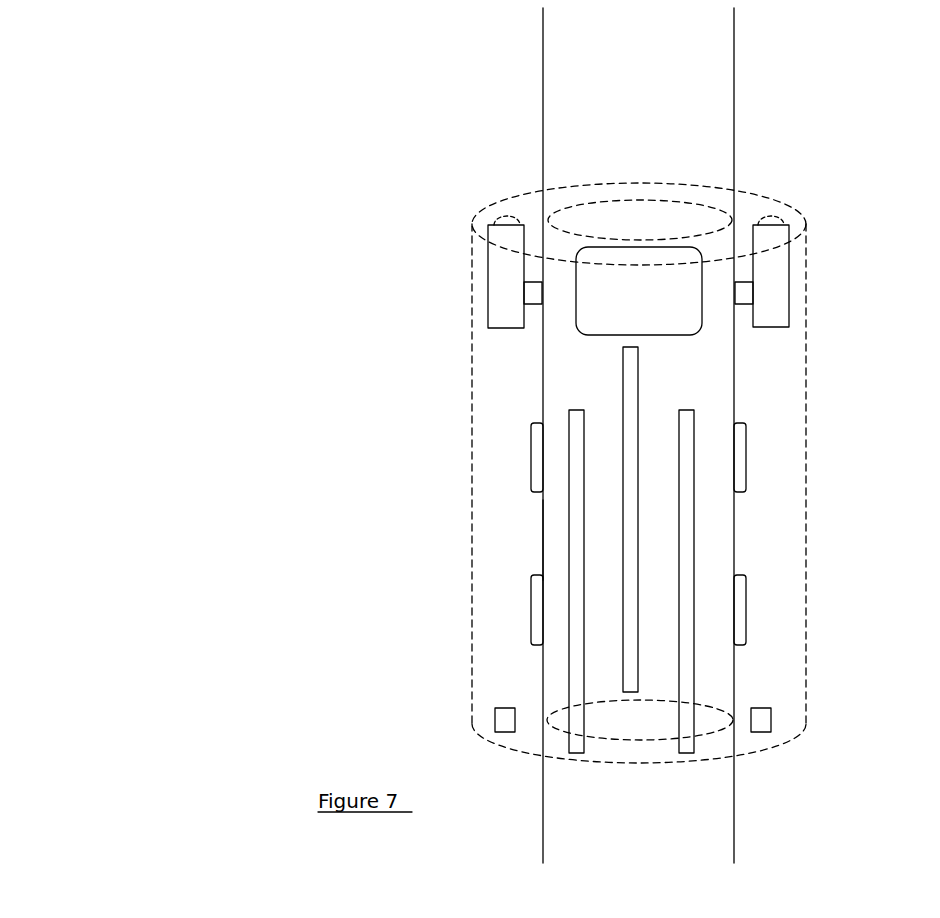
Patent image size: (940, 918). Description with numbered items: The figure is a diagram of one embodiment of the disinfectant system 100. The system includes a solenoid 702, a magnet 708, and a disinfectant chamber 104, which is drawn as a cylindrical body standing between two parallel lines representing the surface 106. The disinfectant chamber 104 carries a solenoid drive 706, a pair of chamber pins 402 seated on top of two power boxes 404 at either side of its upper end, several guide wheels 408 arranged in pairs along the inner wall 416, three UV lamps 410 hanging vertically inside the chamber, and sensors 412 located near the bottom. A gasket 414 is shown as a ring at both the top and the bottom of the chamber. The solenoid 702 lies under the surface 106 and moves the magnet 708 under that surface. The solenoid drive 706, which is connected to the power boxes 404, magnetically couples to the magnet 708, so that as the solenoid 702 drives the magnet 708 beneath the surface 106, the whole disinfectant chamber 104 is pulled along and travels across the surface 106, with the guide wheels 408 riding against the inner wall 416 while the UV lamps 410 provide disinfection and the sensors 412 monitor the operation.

The disinfectant system 100 is at (103, 156).
The disinfectant chamber 104 is at (469, 243).
The surface 106 is at (738, 55).
The chamber pin 402 is at (499, 211).
The power box 404 is at (497, 262).
The guide wheel 408 is at (529, 442).
The UV lamp 410 is at (631, 696).
The sensor 412 is at (492, 714).
The gasket 414 is at (673, 199).
The inner wall 416 is at (541, 540).
The solenoid 702 is at (607, 111).
The solenoid drive 706 is at (526, 298).
The magnet 708 is at (671, 308).